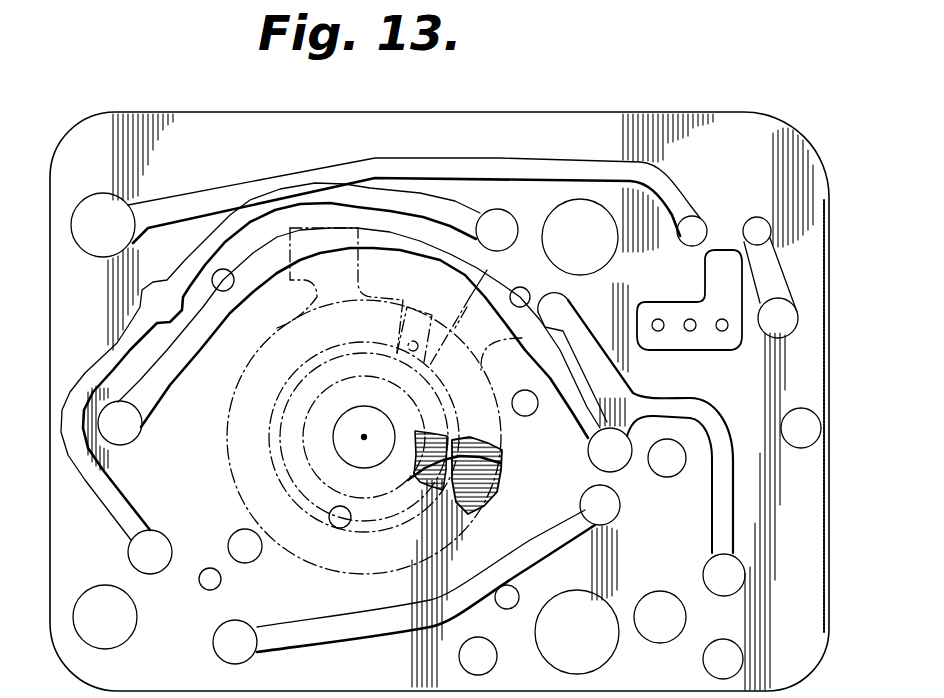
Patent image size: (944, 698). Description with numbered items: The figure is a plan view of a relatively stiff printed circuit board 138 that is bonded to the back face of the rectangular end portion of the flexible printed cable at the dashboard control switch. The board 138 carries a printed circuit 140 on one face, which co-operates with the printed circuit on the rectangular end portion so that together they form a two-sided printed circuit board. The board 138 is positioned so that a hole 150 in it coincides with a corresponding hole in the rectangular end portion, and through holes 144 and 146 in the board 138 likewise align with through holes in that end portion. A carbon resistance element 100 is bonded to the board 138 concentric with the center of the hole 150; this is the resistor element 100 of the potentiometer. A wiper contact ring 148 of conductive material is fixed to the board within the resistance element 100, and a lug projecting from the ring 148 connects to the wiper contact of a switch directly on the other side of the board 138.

The printed circuit board 138 is at (803, 628).
The printed circuit 140 is at (364, 437).
The through hole 144 is at (597, 262).
The through hole 146 is at (556, 662).
The wiper contact ring 148 is at (503, 468).
The carbon resistance element 100 is at (487, 491).
The hole 150 is at (348, 455).